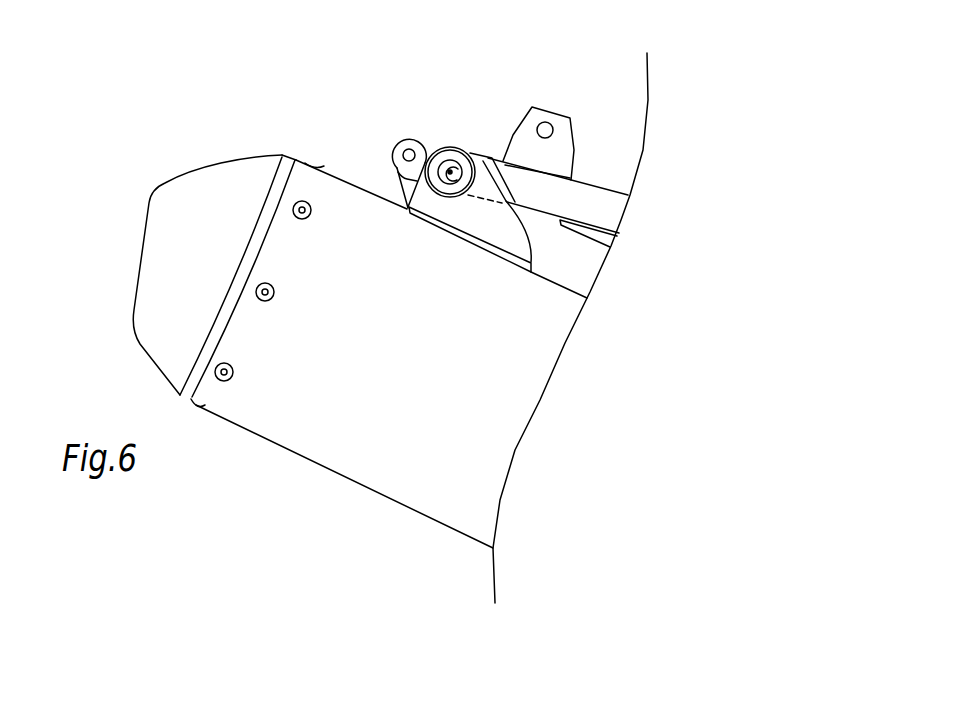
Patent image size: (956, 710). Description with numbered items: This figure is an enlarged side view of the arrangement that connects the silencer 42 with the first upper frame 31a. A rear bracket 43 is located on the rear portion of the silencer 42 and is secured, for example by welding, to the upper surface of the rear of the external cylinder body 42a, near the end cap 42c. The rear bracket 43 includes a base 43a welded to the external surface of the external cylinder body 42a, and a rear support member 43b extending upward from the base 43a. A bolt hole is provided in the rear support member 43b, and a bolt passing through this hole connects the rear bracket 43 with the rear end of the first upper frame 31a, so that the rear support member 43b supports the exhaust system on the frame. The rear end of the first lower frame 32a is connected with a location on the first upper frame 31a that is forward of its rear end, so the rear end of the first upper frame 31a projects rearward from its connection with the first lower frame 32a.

The first upper frame 31a is at (593, 193).
The first lower frame 32a is at (608, 242).
The silencer 42 is at (382, 507).
The external cylinder body 42a is at (277, 435).
The muffler end cap 42c is at (140, 255).
The rear bracket 43 is at (453, 125).
The base 43a is at (530, 267).
The rear support member 43b is at (412, 192).